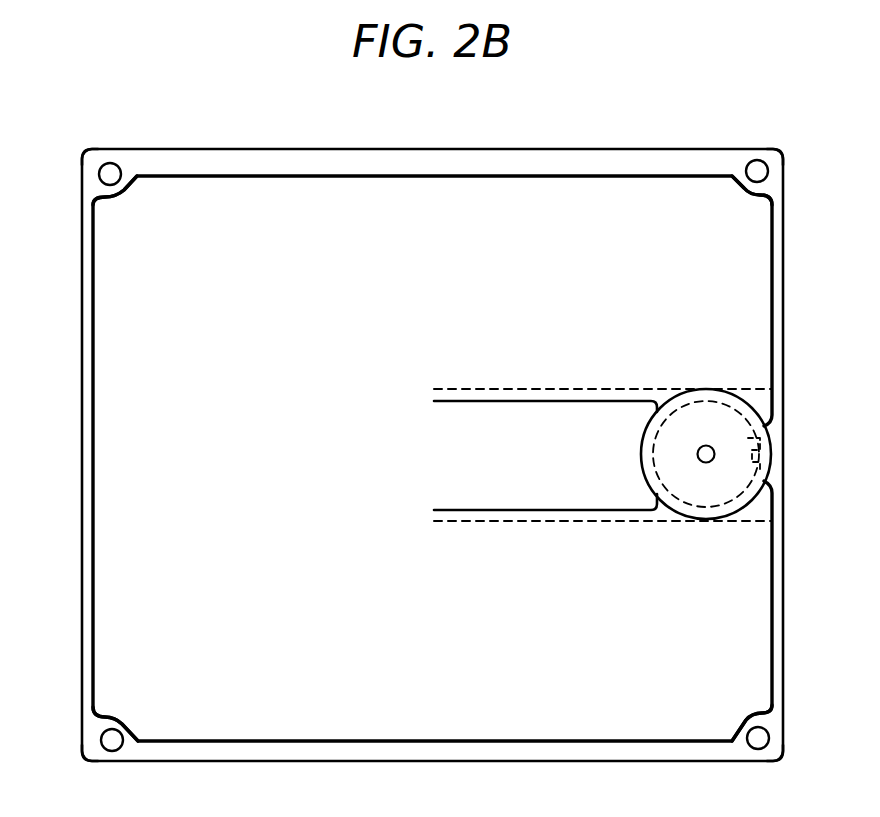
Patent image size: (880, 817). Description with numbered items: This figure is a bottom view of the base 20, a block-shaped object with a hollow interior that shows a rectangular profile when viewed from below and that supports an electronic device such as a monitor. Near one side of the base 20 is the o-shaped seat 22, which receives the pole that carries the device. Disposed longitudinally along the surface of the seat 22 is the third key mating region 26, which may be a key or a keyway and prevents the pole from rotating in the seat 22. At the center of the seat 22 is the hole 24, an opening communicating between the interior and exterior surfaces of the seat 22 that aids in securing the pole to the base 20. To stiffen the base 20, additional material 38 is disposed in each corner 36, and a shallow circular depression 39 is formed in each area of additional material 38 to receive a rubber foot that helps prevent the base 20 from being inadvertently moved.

The base 20 is at (243, 150).
The seat 22 is at (700, 408).
The hole 24 is at (714, 456).
The third key mating region 26 is at (763, 453).
The corner 36 is at (85, 153).
The additional material 38 is at (120, 192).
The shallow circular depression 39 is at (108, 175).